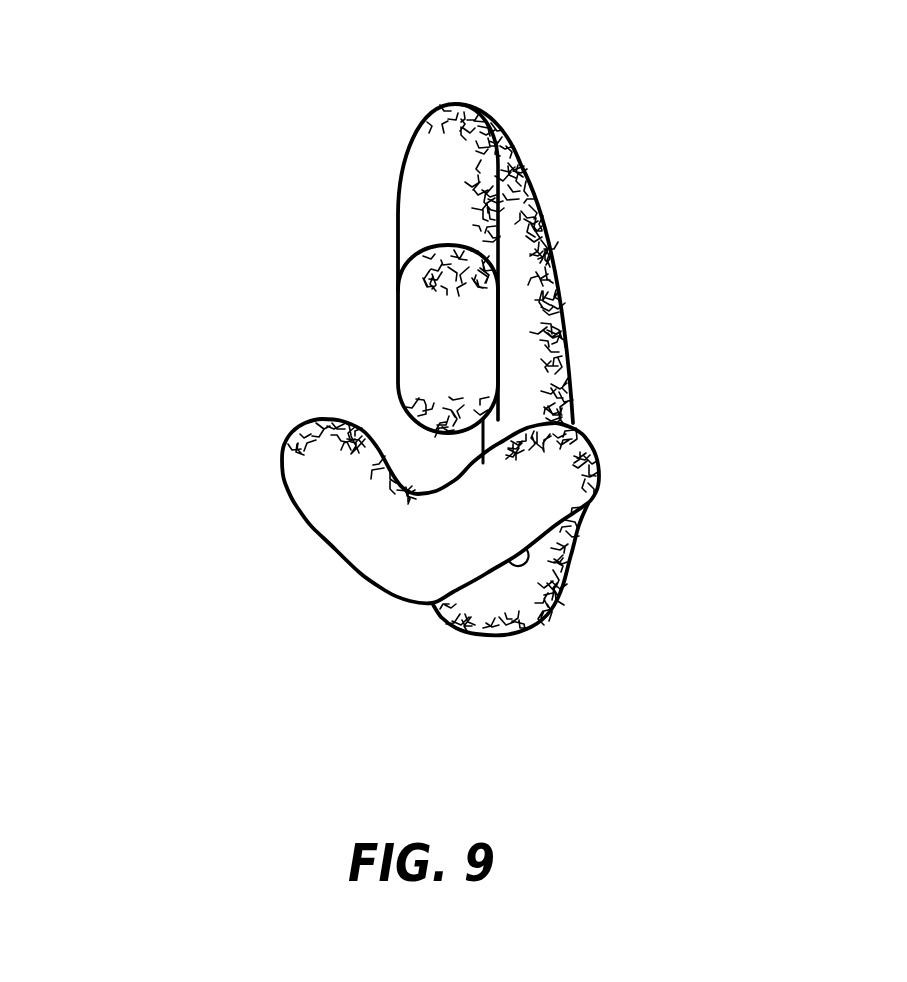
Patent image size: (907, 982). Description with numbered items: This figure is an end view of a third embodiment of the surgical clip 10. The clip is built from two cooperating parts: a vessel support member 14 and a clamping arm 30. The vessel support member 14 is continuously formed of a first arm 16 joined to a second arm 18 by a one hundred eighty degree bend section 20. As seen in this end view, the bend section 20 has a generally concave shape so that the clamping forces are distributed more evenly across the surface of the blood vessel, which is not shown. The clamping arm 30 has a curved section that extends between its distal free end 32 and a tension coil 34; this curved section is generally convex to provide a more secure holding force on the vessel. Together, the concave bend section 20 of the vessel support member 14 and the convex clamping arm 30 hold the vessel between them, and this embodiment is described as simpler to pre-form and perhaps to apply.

The surgical clip 10 is at (675, 121).
The vessel support member 14 is at (607, 506).
The first arm 16 is at (598, 446).
The second arm 18 is at (282, 463).
The bend section 20 is at (407, 565).
The clamping arm 30 is at (380, 296).
The distal free end 32 is at (430, 243).
The tension coil 34 is at (563, 317).